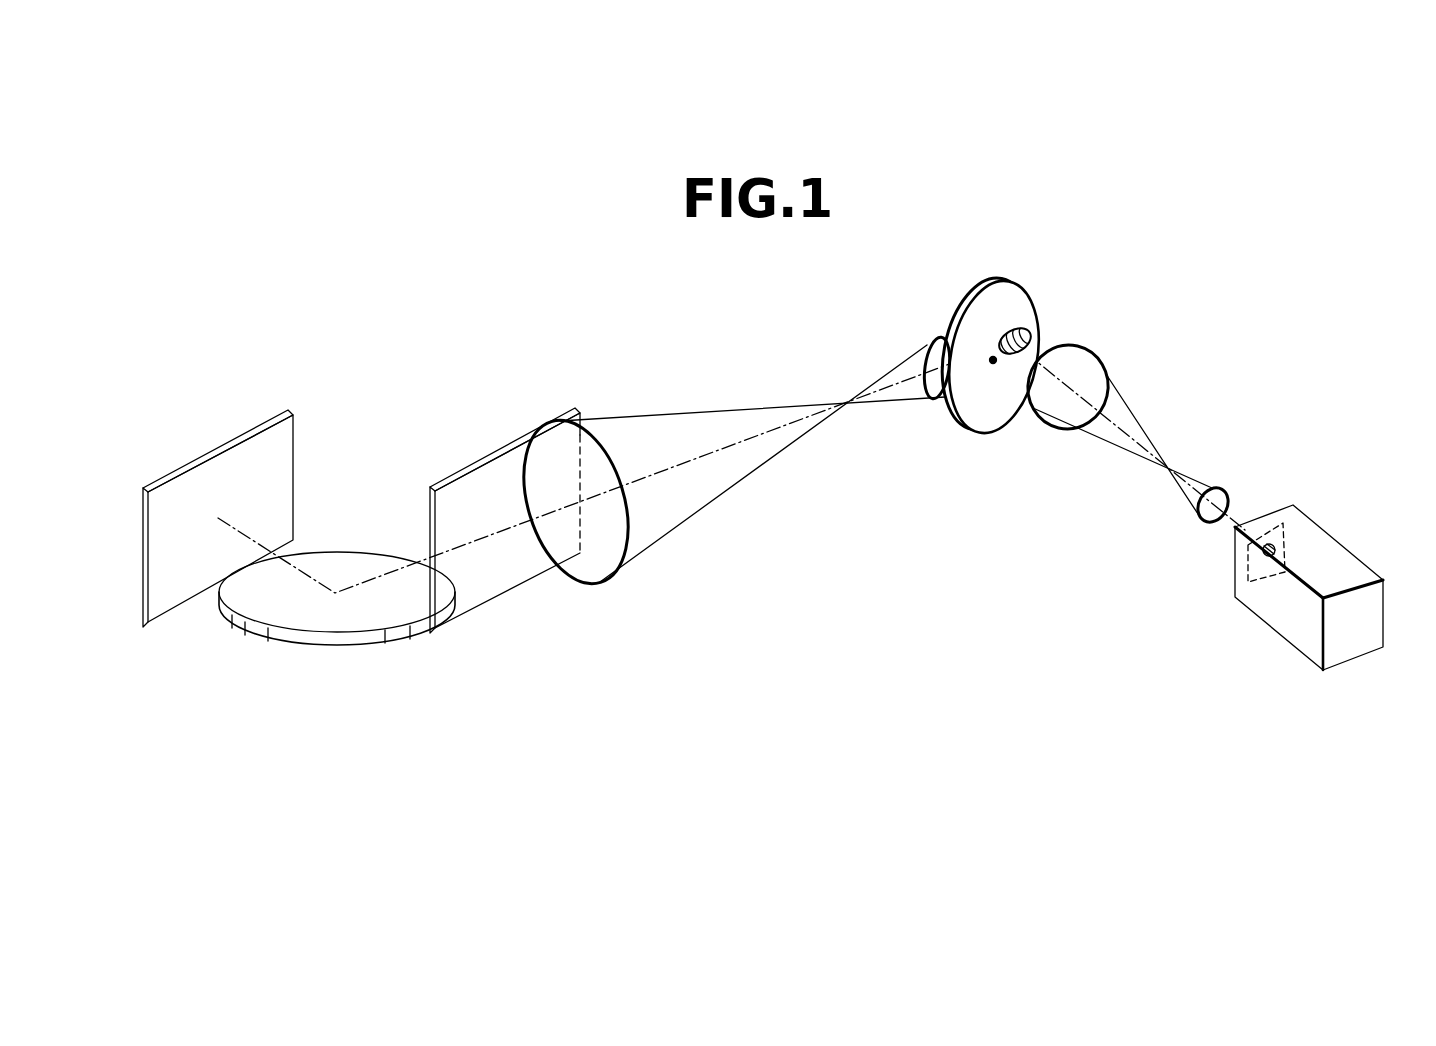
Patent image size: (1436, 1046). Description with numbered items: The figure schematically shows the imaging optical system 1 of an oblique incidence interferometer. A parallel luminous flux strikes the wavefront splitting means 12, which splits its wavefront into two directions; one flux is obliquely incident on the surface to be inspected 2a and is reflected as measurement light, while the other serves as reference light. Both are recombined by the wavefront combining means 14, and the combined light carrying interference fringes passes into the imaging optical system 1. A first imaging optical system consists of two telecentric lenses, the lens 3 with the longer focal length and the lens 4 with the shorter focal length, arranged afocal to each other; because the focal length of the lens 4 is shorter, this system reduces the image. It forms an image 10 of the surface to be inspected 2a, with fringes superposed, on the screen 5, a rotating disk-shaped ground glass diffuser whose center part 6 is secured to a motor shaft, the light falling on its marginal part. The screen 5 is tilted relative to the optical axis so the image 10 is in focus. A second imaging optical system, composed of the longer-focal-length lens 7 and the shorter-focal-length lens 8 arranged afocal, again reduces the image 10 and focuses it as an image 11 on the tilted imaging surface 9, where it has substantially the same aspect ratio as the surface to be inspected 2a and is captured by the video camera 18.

The imaging optical system 1 is at (952, 556).
The surface to be inspected 2a is at (281, 612).
The lens having a longer focal length 3 is at (598, 575).
The lens having a shorter focal length 4 is at (937, 340).
The screen 5 is at (1002, 302).
The center part 6 is at (993, 365).
The lens having a longer focal length 7 is at (1057, 407).
The lens having a shorter focal length 8 is at (1200, 518).
The imaging surface 9 is at (1262, 522).
The image 10 is at (1023, 330).
The image 11 is at (1244, 562).
The wavefront splitting means 12 is at (241, 458).
The wavefront combining means 14 is at (473, 482).
The video camera 18 is at (1338, 552).